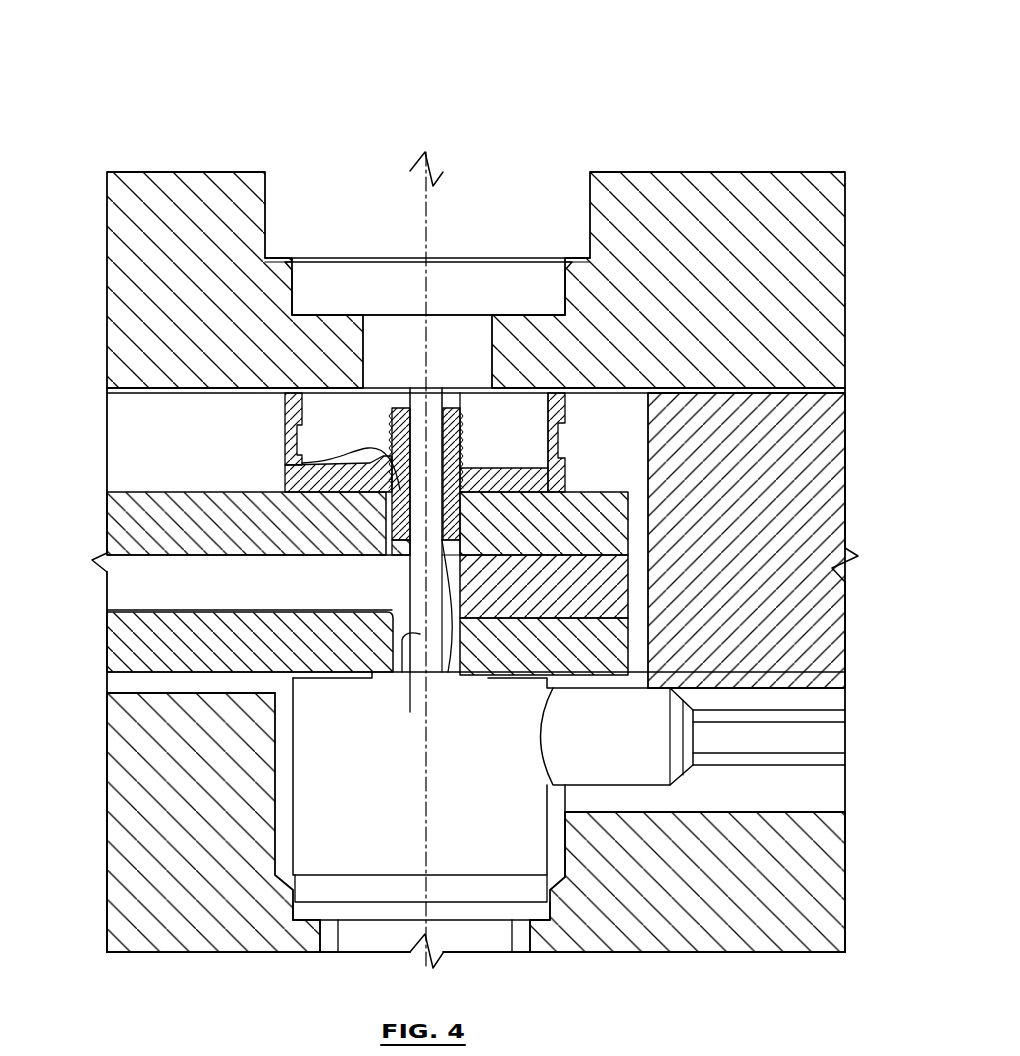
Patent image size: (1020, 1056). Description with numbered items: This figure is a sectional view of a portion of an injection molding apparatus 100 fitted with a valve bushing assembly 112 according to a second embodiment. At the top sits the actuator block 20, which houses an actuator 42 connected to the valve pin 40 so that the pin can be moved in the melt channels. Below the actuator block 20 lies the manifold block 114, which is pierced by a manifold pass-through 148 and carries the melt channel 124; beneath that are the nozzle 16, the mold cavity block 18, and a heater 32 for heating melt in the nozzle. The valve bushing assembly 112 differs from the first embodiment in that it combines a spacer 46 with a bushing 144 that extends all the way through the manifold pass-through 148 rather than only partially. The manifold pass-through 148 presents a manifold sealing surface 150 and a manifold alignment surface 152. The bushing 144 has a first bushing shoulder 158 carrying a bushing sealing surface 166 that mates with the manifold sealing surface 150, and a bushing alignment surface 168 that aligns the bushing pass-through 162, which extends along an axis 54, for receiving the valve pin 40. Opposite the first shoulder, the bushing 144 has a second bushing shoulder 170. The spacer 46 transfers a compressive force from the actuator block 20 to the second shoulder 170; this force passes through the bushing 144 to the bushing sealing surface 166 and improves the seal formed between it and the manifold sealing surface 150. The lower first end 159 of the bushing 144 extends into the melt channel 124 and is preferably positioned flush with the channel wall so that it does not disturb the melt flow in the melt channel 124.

The injection molding apparatus 100 is at (560, 128).
The actuator block 20 is at (732, 183).
The actuator 42 is at (568, 185).
The valve bushing assembly 112 is at (458, 386).
The bushing pass-through 162 is at (419, 408).
The bushing 144 is at (455, 416).
The valve pin 40 is at (412, 598).
The manifold pass-through 148 is at (302, 465).
The bushing alignment surface 168 is at (393, 508).
The second bushing shoulder 170 is at (478, 472).
The spacer 46 is at (562, 405).
The manifold sealing surface 150 is at (470, 514).
The bushing sealing surface 166 is at (462, 538).
The first bushing shoulder 158 is at (544, 615).
The first end 159 is at (453, 672).
The manifold alignment surface 152 is at (398, 530).
The melt channel 124 is at (132, 591).
The manifold block 114 is at (115, 646).
The axis 54 is at (401, 672).
The nozzle 16 is at (300, 777).
The mold cavity block 18 is at (780, 833).
The heater 32 is at (655, 765).